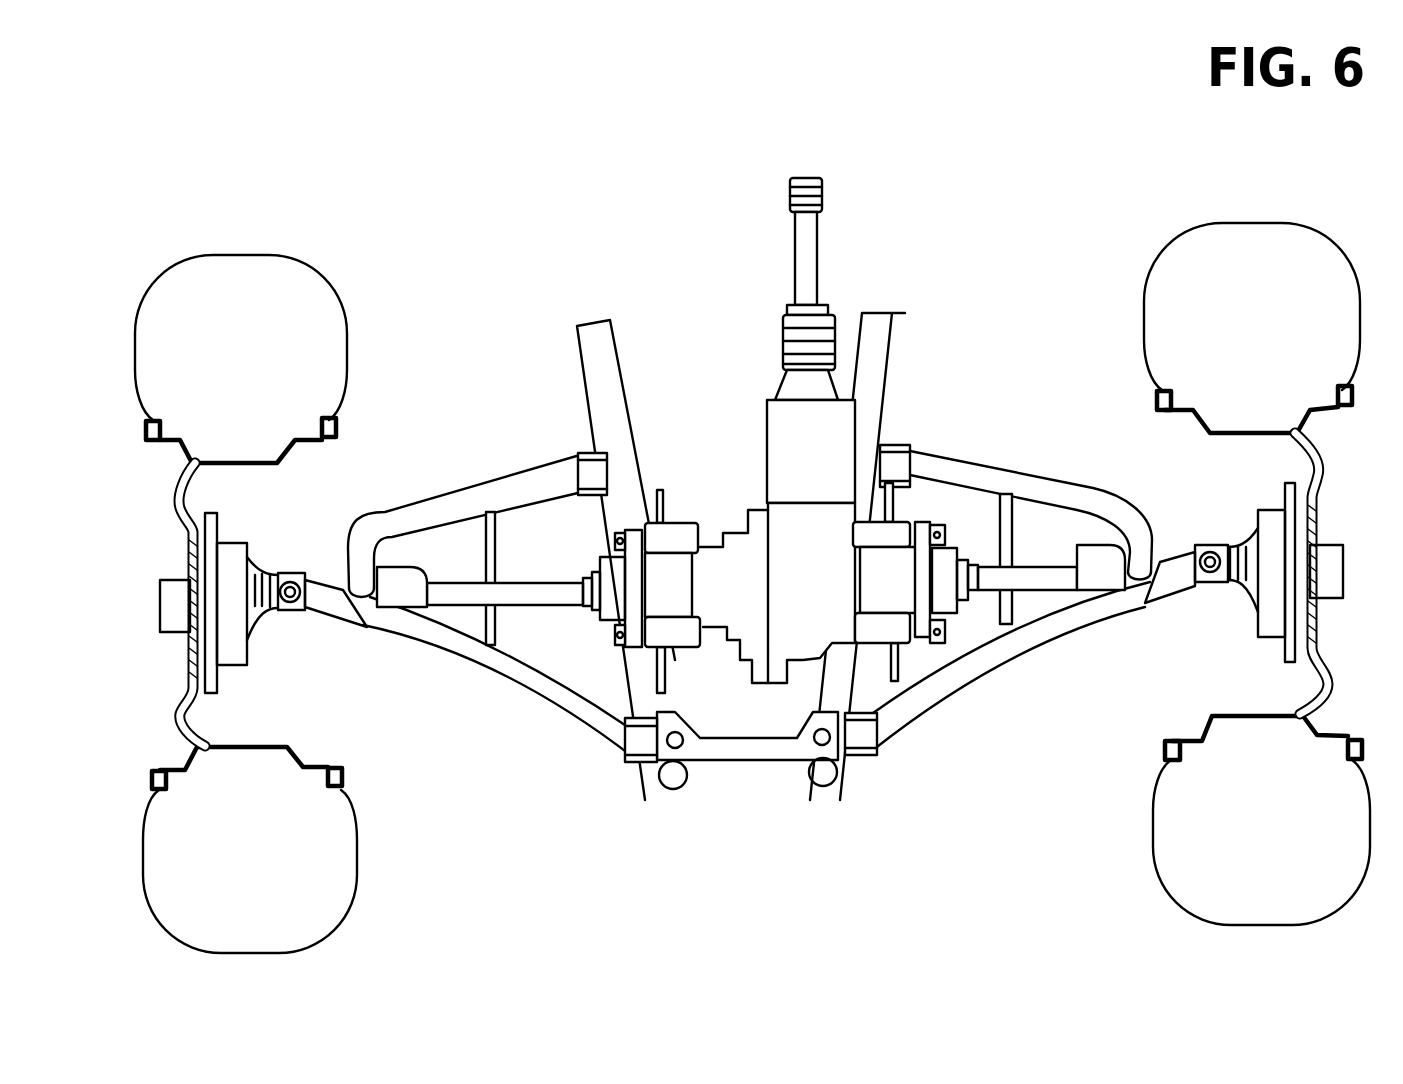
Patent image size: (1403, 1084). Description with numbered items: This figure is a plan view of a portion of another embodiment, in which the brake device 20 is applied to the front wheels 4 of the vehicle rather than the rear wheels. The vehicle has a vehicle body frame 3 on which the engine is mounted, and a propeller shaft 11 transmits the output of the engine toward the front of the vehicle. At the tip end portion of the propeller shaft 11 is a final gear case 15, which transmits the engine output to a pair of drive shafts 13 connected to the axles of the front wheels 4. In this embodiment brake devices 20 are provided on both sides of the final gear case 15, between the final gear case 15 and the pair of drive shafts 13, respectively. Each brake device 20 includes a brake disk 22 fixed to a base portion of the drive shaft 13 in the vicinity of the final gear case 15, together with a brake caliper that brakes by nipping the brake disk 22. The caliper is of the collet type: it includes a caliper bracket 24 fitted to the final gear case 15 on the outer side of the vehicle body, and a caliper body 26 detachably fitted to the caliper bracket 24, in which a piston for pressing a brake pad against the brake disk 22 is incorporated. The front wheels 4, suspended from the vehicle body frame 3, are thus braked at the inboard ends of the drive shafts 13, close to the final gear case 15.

The vehicle body frame 3 is at (590, 400).
The front wheels 4 is at (315, 252).
The propeller shaft 11 is at (803, 236).
The drive shafts 13 is at (454, 580).
The final gear case 15 is at (785, 660).
The brake device 20 is at (573, 613).
The brake disk 22 is at (658, 712).
The caliper bracket 24 is at (672, 537).
The caliper body 26 is at (607, 614).